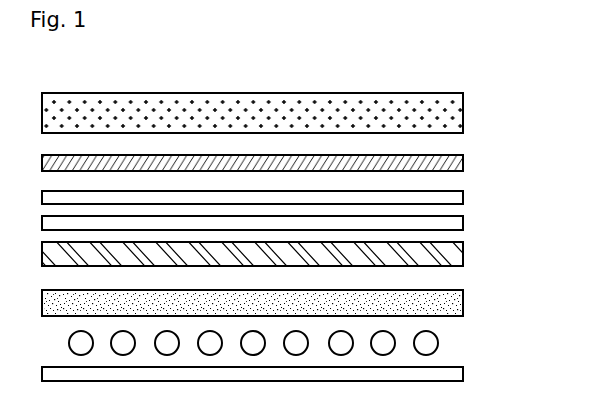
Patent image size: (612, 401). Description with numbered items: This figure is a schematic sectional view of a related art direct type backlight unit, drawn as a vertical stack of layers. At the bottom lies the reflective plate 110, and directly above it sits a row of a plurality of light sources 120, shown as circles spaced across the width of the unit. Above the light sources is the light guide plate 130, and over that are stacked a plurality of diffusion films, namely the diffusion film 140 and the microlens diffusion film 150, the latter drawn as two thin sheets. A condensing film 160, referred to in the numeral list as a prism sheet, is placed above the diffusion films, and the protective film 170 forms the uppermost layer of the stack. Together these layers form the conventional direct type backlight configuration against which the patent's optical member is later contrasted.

The reflective plate 110 is at (463, 372).
The light sources 120 is at (438, 342).
The light guide plate 130 is at (463, 301).
The diffusion film 140 is at (463, 250).
The microlens diffusion film 150 is at (463, 201).
The condensing film 160 is at (463, 162).
The protective film 170 is at (463, 113).